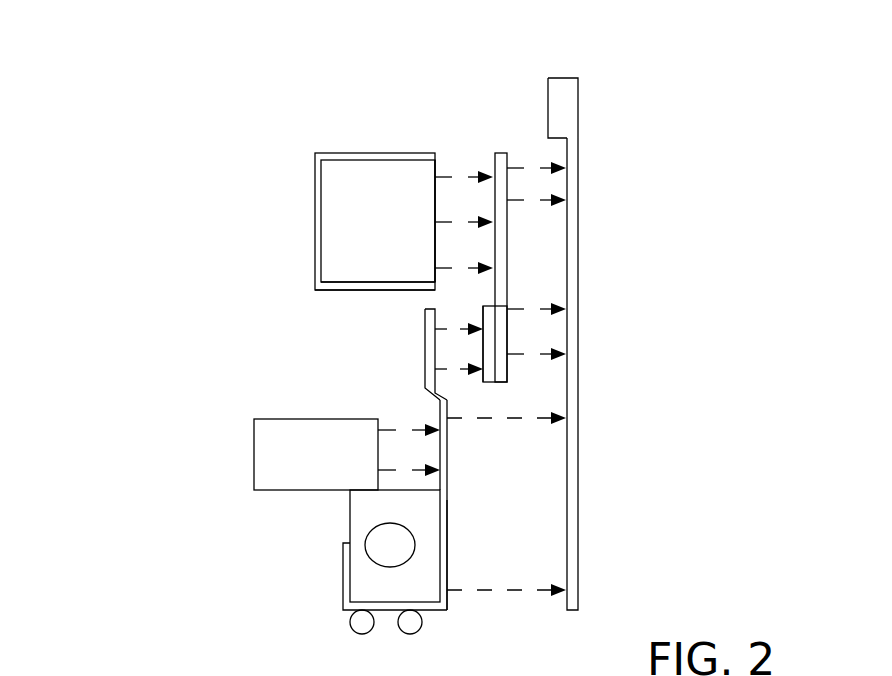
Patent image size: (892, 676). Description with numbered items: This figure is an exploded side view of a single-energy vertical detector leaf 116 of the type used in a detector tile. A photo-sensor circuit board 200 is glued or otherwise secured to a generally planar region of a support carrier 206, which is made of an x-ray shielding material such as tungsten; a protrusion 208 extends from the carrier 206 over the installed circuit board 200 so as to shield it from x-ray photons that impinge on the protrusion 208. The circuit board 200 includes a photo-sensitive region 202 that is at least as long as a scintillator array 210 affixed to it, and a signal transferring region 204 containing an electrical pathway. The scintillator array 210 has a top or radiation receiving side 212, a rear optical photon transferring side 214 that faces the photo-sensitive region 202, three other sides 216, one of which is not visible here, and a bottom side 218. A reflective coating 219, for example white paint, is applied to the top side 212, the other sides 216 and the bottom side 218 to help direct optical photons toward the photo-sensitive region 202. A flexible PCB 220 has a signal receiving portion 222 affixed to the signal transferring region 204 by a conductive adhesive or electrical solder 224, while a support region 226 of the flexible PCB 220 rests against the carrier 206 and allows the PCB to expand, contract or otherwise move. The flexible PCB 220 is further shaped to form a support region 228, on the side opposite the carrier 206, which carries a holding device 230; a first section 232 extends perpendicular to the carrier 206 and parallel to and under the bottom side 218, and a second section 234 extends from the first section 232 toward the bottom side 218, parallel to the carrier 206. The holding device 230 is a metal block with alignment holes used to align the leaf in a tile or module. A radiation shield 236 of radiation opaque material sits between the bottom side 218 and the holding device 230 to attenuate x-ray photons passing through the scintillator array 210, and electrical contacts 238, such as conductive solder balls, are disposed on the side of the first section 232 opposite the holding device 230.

The radiation detection system 116 is at (184, 87).
The photo-sensor circuit board 200 is at (507, 257).
The photo-sensitive region 202 is at (497, 153).
The signal transferring region 204 is at (500, 340).
The support carrier 206 is at (578, 113).
The protrusion 208 is at (548, 78).
The scintillator array 210 is at (337, 255).
The top side 212 is at (363, 160).
The optical photon transferring side 214 is at (440, 166).
The other sides 216 is at (320, 186).
The bottom side 218 is at (347, 283).
The reflective coating 219 is at (318, 152).
The flexible PCB 220 is at (447, 503).
The signal receiving portion 222 is at (425, 329).
The conductive adhesive or electrical solder 224 is at (483, 350).
The support region 226 is at (447, 567).
The support region 228 is at (357, 569).
The holding device 230 is at (350, 512).
The first section 232 is at (383, 615).
The second section 234 is at (343, 590).
The radiation shield 236 is at (254, 464).
The electrical contacts 238 is at (415, 625).